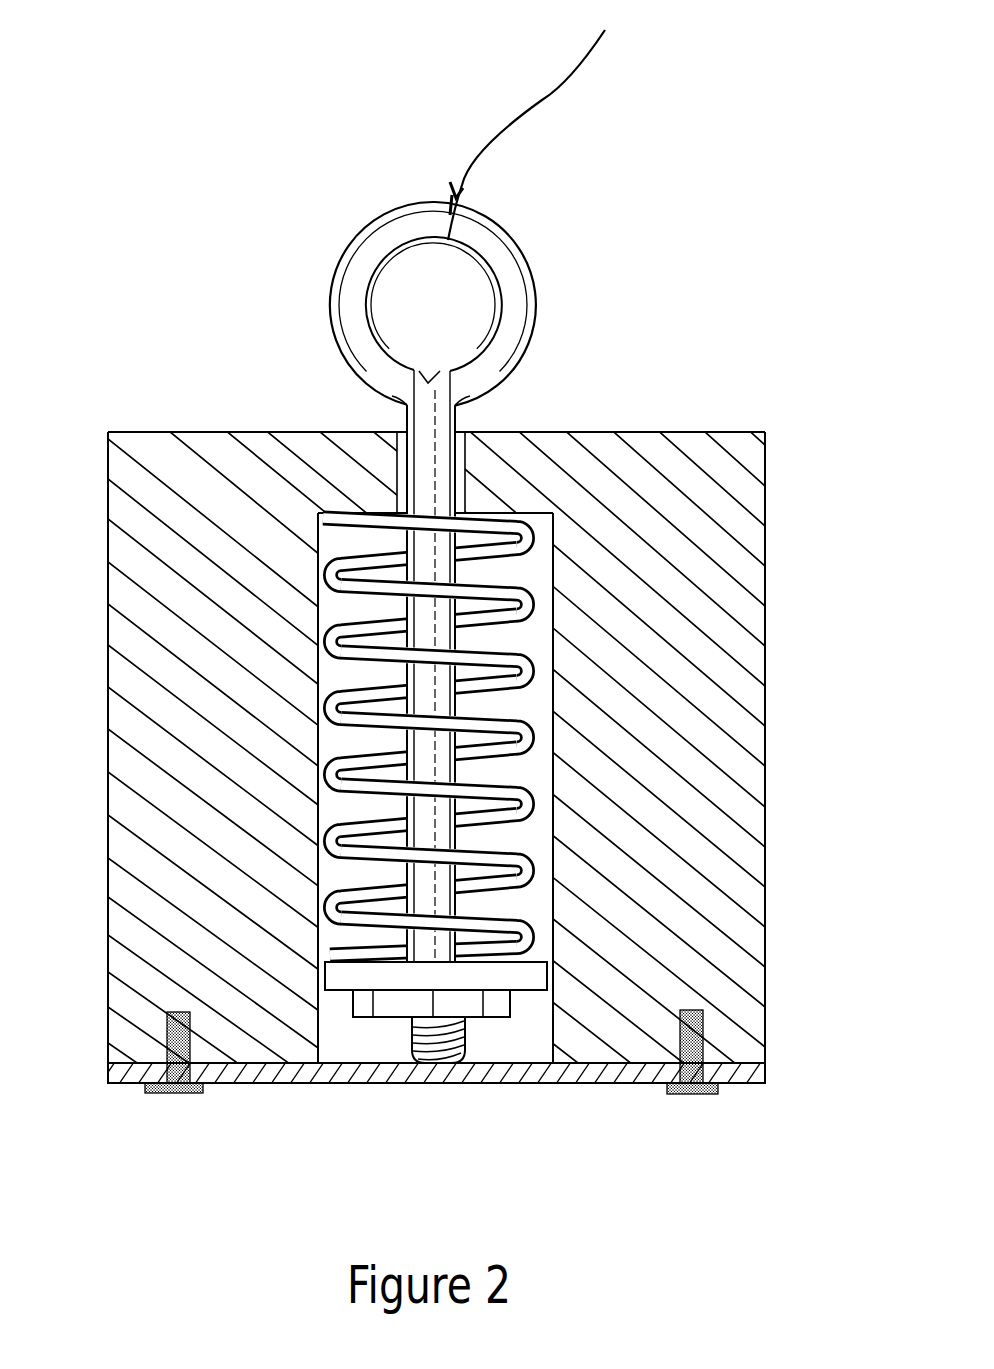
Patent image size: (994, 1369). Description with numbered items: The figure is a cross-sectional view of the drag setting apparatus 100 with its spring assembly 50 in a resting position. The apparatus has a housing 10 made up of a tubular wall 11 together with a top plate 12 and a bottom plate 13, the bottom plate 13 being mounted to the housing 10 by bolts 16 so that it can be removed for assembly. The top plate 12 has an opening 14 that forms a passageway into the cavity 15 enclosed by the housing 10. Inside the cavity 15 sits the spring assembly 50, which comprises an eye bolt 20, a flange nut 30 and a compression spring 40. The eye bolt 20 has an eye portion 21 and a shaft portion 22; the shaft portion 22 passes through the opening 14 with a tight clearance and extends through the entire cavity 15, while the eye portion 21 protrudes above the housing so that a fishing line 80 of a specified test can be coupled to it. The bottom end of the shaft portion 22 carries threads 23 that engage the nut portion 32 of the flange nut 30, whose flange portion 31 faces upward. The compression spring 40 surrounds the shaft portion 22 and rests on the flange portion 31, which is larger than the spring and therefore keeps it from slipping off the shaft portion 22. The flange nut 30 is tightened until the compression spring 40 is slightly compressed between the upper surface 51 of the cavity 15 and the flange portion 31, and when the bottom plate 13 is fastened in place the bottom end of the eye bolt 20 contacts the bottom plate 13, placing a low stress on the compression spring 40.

The drag setting apparatus 100 is at (797, 93).
The cylindrical housing 10 is at (775, 432).
The tubular wall 11 is at (768, 707).
The top plate 12 is at (699, 423).
The bottom plate 13 is at (537, 1083).
The opening 14 is at (467, 424).
The cavity 15 is at (335, 1023).
The bolts 16 is at (173, 1025).
The eye bolt 20 is at (395, 408).
The eye portion 21 is at (521, 277).
The shaft portion 22 is at (450, 766).
The threads 23 is at (406, 1062).
The flange nut 30 is at (524, 1008).
The flange portion 31 is at (512, 977).
The nut portion 32 is at (402, 1017).
The compression spring 40 is at (502, 658).
The spring assembly 50 is at (528, 562).
The upper surface 51 is at (327, 520).
The fishing line 80 is at (545, 100).